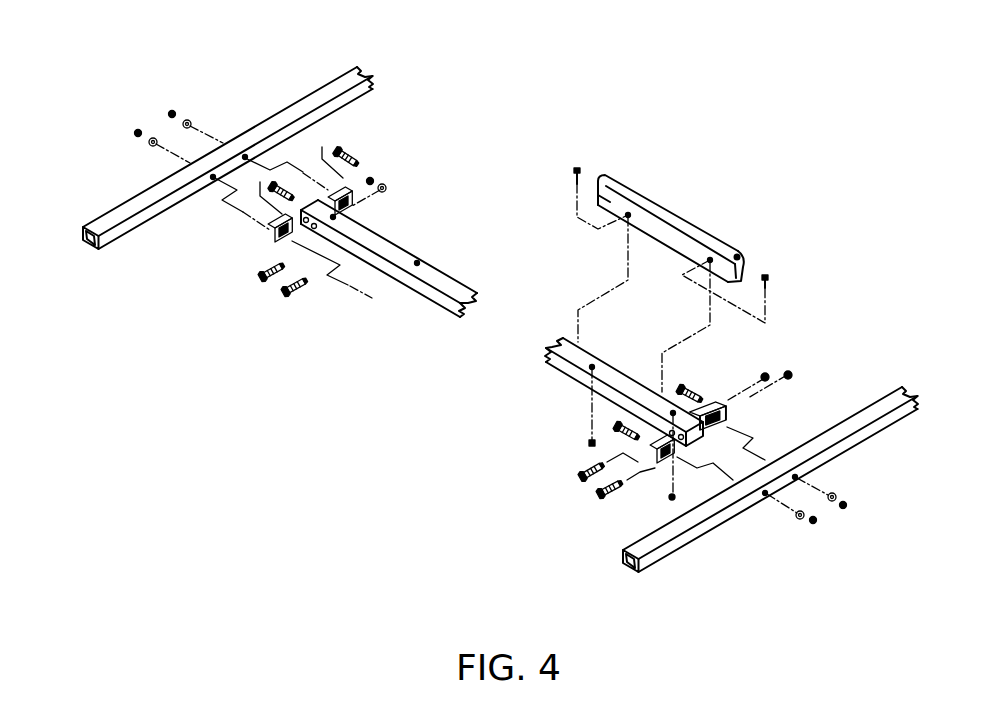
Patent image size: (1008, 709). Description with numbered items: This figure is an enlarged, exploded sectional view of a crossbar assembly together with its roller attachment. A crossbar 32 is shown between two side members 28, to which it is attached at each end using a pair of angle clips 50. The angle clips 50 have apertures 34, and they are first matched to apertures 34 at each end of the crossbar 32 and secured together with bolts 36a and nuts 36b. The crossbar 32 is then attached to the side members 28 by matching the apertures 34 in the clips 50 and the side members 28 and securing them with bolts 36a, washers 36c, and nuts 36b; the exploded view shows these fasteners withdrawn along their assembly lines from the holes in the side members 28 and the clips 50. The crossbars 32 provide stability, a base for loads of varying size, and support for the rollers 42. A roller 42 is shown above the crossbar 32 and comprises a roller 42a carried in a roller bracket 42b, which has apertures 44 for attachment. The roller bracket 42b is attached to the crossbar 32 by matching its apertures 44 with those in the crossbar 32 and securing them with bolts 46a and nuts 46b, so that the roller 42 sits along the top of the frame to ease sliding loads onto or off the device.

The side member 28 is at (317, 92).
The crossbar 32 is at (417, 286).
The aperture 34 is at (213, 178).
The bolt 36a is at (343, 148).
The nut 36b is at (172, 111).
The washer 36c is at (188, 121).
The roller 42 is at (710, 187).
The roller 42a is at (685, 223).
The roller bracket 42b is at (740, 268).
The aperture 44 is at (417, 263).
The bolt 46a is at (575, 170).
The nut 46b is at (589, 443).
The angle clip 50 is at (271, 236).